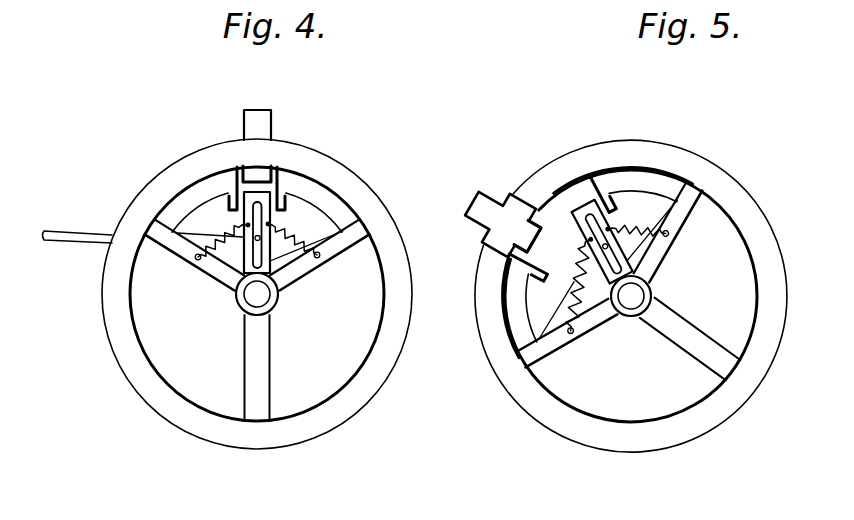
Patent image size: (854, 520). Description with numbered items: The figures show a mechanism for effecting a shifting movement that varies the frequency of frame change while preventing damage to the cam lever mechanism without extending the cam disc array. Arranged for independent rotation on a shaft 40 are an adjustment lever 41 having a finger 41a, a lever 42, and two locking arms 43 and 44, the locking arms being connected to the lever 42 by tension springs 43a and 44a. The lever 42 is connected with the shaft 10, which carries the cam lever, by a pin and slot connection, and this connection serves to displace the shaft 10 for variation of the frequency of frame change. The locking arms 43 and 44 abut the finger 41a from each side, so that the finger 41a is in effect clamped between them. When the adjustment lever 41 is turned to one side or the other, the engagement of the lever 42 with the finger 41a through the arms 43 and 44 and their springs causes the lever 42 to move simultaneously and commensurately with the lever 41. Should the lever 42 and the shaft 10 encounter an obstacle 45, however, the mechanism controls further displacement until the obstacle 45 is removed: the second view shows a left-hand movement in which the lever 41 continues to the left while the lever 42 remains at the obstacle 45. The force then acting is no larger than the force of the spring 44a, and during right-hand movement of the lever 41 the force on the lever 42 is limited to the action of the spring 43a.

In FIG. 4, the shaft 10 is at (75, 236).
In FIG. 4, the shaft 40 is at (255, 293).
In FIG. 5, the shaft 40 is at (632, 297).
In FIG. 4, the adjustment lever 41 is at (263, 124).
In FIG. 5, the adjustment lever 41 is at (476, 211).
In FIG. 4, the finger 41a is at (250, 166).
In FIG. 5, the finger 41a is at (522, 228).
In FIG. 4, the lever 42 is at (264, 266).
In FIG. 5, the lever 42 is at (574, 210).
In FIG. 4, the locking arm 43 is at (300, 190).
In FIG. 5, the locking arm 43 is at (682, 207).
In FIG. 4, the tension spring 43a is at (316, 255).
In FIG. 5, the tension spring 43a is at (666, 238).
In FIG. 4, the locking arm 44 is at (195, 198).
In FIG. 5, the locking arm 44 is at (525, 321).
In FIG. 4, the tension spring 44a is at (200, 255).
In FIG. 5, the tension spring 44a is at (568, 308).
In FIG. 5, the obstacle 45 is at (590, 304).